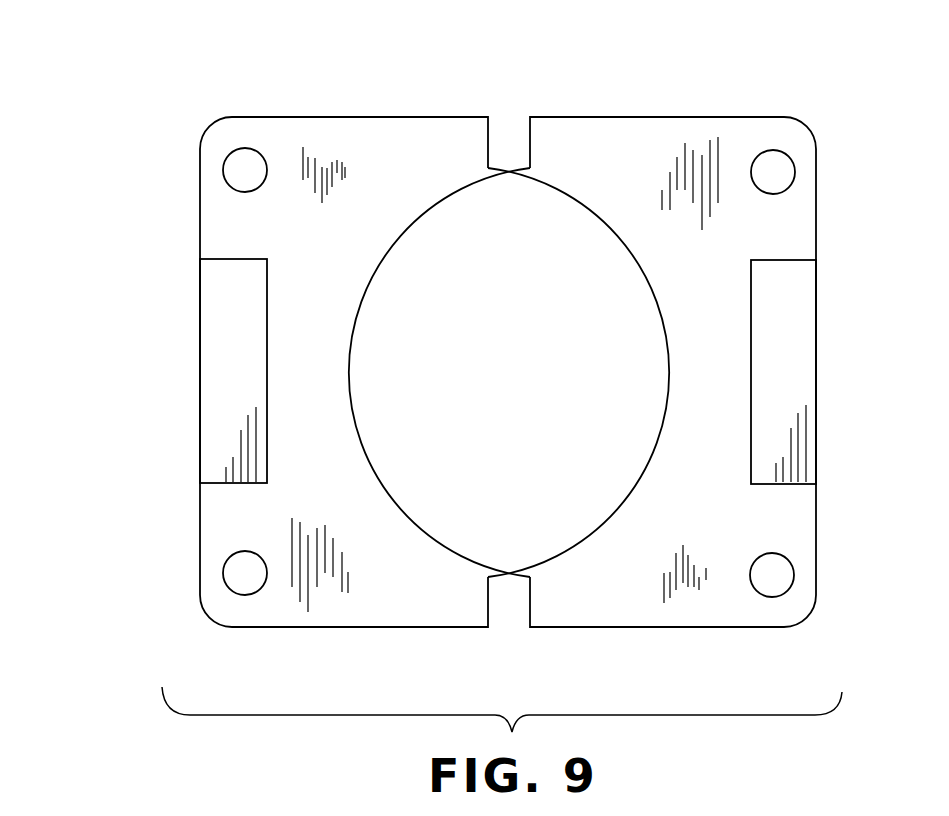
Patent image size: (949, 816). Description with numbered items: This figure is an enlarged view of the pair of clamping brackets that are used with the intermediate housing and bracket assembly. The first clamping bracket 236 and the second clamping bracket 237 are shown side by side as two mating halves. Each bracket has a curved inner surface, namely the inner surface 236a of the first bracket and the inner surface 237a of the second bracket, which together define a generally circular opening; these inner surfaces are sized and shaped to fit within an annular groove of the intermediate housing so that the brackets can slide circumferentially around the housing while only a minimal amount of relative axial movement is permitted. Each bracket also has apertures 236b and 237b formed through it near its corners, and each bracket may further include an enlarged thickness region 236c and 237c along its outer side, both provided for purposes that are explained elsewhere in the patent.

The first clamping bracket 236 is at (371, 143).
The inner surface 236a is at (328, 467).
The apertures 236b is at (222, 170).
The enlarged thickness region 236c is at (220, 341).
The second clamping bracket 237 is at (604, 135).
The inner surface 237a is at (692, 280).
The apertures 237b is at (788, 165).
The enlarged thickness region 237c is at (780, 335).